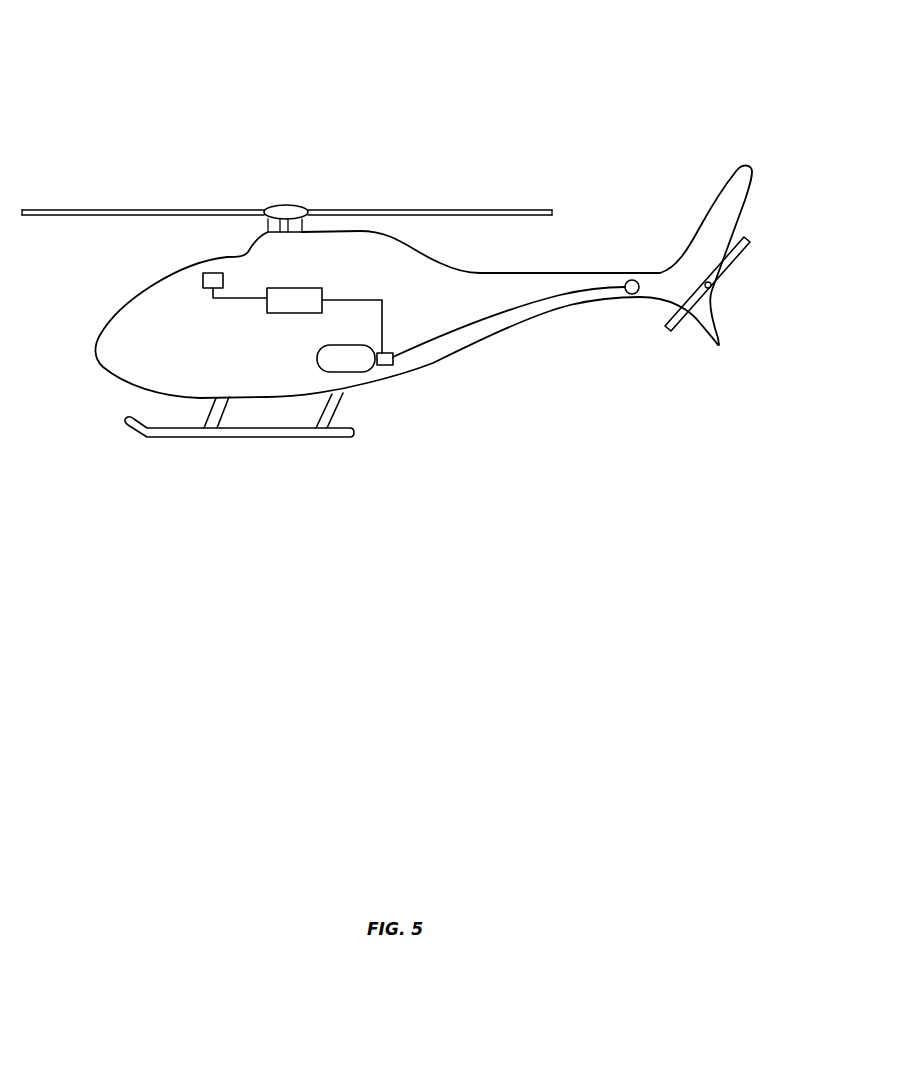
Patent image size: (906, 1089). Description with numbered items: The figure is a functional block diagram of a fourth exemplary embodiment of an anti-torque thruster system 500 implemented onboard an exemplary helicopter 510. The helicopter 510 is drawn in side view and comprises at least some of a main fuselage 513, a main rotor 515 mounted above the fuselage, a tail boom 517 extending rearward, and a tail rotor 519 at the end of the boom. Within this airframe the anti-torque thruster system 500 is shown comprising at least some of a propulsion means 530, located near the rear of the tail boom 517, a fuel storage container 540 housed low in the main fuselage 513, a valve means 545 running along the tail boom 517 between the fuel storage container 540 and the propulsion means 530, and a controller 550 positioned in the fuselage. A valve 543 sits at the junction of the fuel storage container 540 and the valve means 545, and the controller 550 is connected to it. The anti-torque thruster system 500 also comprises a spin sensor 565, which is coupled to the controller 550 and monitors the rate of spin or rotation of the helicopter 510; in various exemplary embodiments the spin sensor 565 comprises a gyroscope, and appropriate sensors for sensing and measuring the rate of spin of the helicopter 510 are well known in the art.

The anti-torque thruster system 500 is at (246, 46).
The helicopter 510 is at (145, 169).
The main fuselage 513 is at (110, 374).
The main rotor 515 is at (396, 207).
The tail boom 517 is at (580, 269).
The tail rotor 519 is at (741, 262).
The propulsion means 530 is at (634, 303).
The fuel storage container 540 is at (371, 375).
The valve 543 is at (396, 373).
The valve means 545 is at (506, 315).
The controller 550 is at (328, 287).
The spin sensor 565 is at (199, 278).